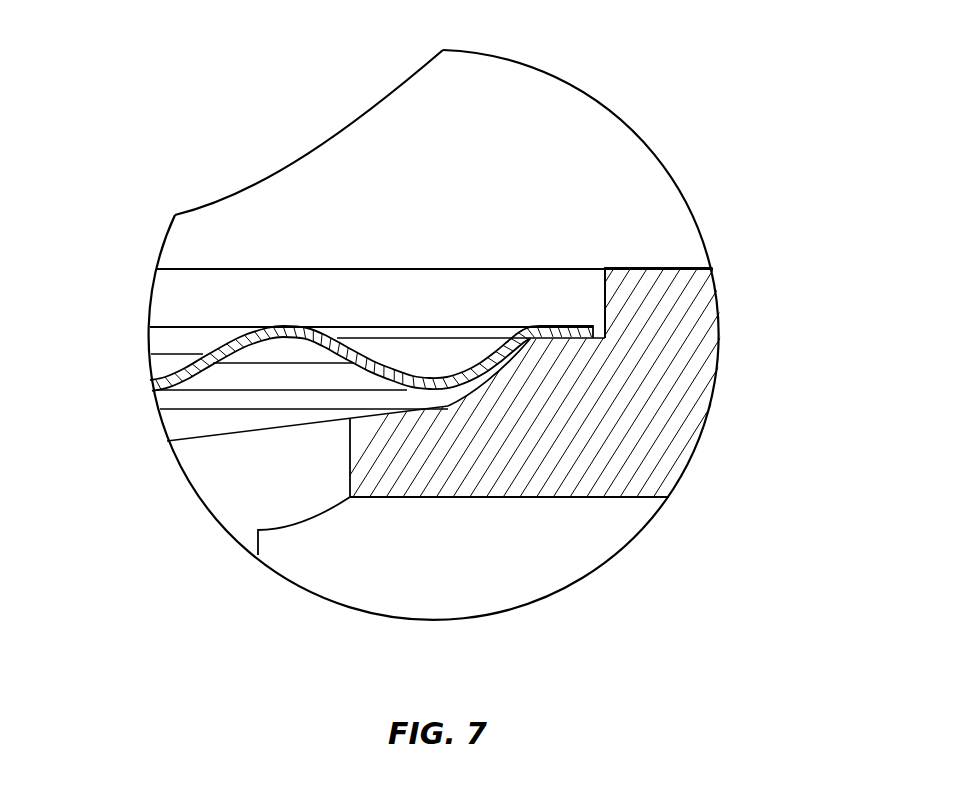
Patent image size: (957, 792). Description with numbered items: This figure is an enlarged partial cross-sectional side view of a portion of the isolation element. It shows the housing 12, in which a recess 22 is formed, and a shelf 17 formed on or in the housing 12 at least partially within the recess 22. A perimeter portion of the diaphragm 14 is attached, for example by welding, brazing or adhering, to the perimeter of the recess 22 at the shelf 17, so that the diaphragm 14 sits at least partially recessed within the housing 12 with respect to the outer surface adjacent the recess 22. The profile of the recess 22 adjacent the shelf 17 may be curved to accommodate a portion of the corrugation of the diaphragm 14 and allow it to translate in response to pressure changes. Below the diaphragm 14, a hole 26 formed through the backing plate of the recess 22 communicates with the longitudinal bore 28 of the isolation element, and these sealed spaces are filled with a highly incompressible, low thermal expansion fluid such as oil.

The housing 12 is at (540, 172).
The diaphragm 14 is at (573, 325).
The shelf 17 is at (528, 371).
The recess 22 is at (188, 424).
The hole 26 is at (245, 472).
The longitudinal bore 28 is at (523, 563).